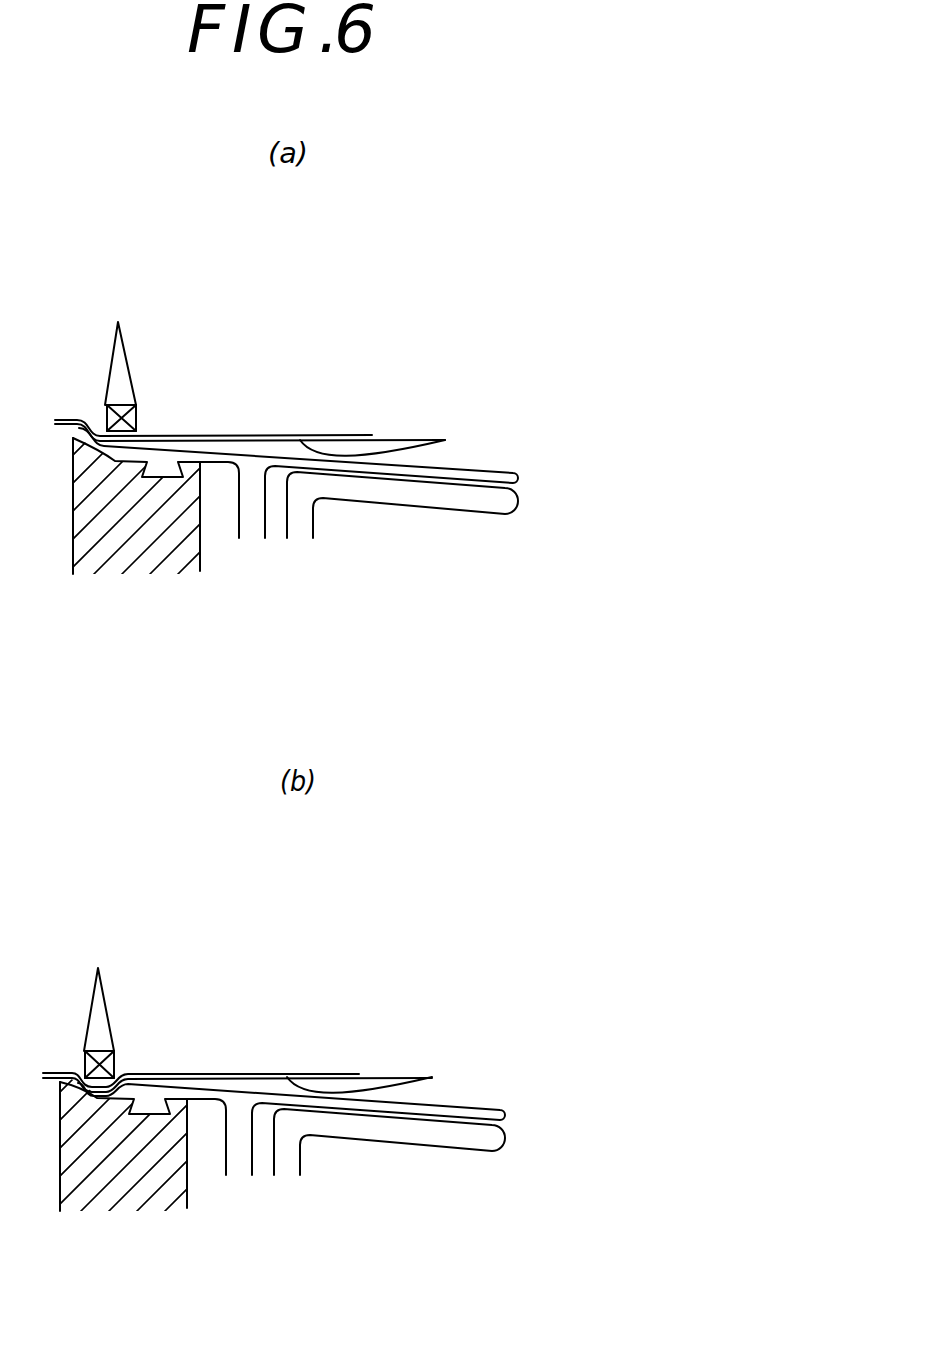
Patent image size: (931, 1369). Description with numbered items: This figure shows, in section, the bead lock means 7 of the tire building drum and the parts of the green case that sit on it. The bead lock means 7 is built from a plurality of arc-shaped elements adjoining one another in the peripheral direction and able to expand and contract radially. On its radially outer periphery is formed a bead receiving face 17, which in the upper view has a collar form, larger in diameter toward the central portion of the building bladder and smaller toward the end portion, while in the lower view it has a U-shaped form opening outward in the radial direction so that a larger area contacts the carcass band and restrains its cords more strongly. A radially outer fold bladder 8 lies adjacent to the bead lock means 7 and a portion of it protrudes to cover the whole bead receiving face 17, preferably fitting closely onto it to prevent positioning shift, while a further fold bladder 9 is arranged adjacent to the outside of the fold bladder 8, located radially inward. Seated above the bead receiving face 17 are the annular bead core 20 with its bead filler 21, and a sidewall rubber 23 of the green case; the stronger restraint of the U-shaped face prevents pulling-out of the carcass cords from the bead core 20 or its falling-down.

The bead lock means 7 is at (122, 532).
The fold bladder 8 is at (427, 464).
The fold bladder 9 is at (519, 508).
The bead receiving face 17 is at (100, 460).
The bead core 20 is at (140, 415).
The bead filler 21 is at (120, 347).
The sidewall rubber 23 is at (393, 445).